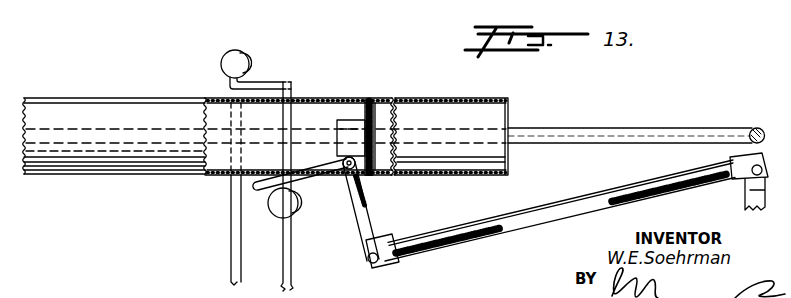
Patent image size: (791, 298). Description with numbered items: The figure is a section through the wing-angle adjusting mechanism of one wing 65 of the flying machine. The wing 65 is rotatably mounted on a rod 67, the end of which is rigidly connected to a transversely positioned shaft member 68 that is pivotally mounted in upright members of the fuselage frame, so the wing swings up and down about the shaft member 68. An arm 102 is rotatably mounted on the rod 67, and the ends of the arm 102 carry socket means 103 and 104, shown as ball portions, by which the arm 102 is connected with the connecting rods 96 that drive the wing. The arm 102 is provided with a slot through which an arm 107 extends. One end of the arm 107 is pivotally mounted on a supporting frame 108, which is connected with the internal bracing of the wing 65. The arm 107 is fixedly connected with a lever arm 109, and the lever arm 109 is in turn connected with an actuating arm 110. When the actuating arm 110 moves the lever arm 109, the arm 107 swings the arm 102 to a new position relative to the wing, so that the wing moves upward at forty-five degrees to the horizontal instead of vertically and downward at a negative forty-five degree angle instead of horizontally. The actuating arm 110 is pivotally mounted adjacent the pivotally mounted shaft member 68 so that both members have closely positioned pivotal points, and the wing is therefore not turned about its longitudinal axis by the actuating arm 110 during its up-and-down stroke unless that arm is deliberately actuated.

The wing 65 is at (482, 100).
The rod 67 is at (604, 129).
The shaft member 68 is at (760, 129).
The connecting rods 96 is at (292, 278).
The arm 102 is at (290, 90).
The socket means 103 is at (247, 53).
The socket means 104 is at (297, 213).
The arm 107 is at (325, 175).
The supporting frame 108 is at (356, 120).
The lever arm 109 is at (372, 237).
The actuating arm 110 is at (540, 218).